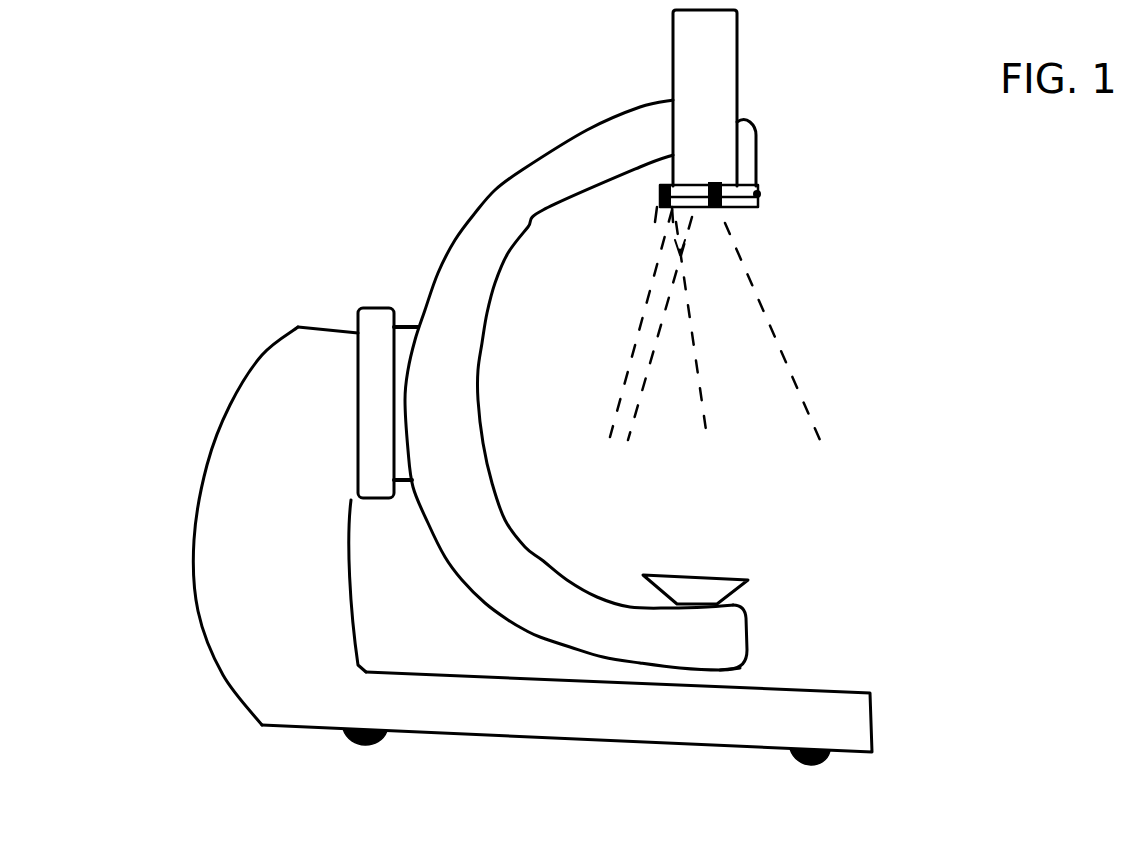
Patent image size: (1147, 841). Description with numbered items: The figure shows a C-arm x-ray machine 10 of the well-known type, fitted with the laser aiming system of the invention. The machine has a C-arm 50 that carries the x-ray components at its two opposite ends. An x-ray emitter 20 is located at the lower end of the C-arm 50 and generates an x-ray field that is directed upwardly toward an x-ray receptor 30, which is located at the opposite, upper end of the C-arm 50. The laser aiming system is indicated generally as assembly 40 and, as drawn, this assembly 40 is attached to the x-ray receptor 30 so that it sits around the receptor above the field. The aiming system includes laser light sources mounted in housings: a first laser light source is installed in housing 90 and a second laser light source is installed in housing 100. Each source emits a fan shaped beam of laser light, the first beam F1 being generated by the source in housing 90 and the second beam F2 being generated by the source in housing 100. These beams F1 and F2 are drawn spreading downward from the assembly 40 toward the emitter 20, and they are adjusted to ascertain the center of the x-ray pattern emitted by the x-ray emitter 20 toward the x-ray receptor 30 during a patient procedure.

The C-arm x-ray machine 10 is at (895, 322).
The x-ray emitter 20 is at (750, 582).
The x-ray receptor 30 is at (740, 157).
The laser aiming system 40 is at (758, 197).
The C-arm 50 is at (523, 170).
The housing 90 is at (715, 185).
The housing 100 is at (667, 190).
The fan shaped beam of laser light F1 is at (755, 303).
The fan shaped beam of laser light F2 is at (654, 280).